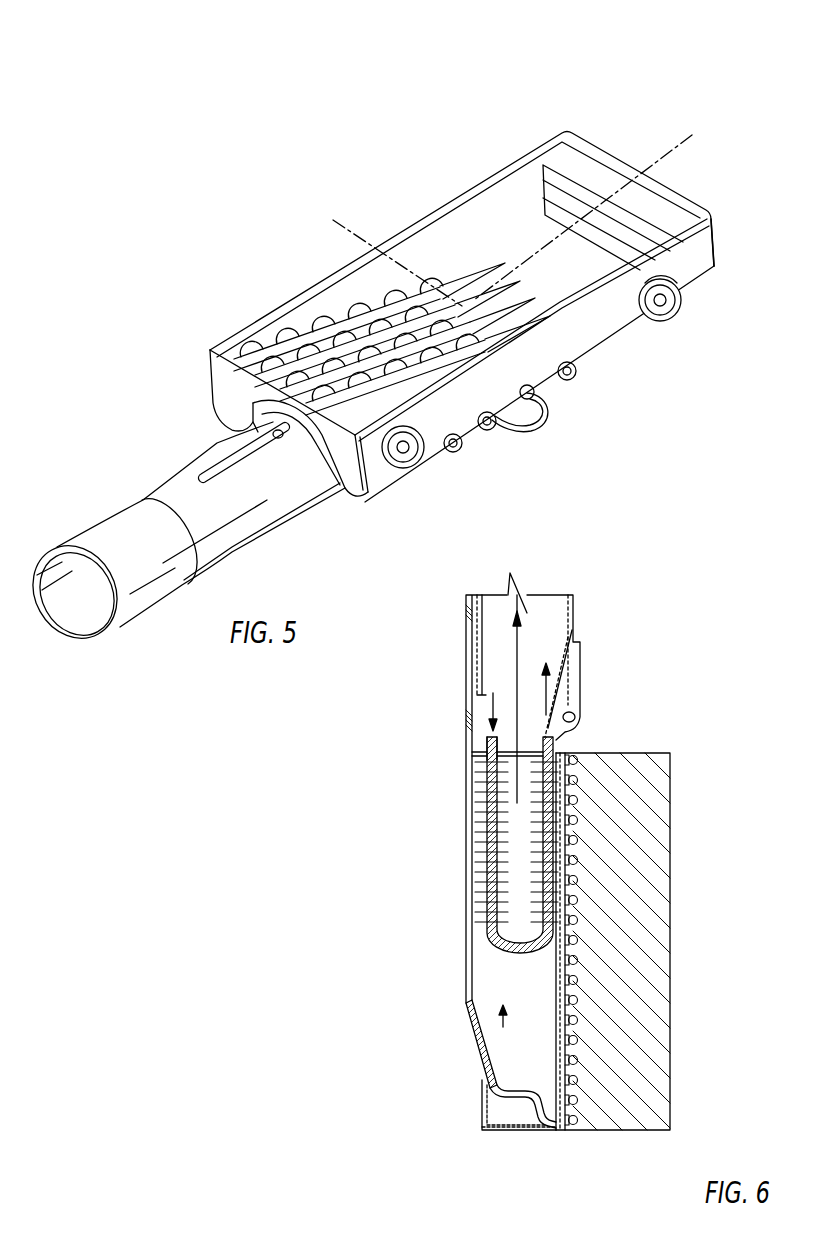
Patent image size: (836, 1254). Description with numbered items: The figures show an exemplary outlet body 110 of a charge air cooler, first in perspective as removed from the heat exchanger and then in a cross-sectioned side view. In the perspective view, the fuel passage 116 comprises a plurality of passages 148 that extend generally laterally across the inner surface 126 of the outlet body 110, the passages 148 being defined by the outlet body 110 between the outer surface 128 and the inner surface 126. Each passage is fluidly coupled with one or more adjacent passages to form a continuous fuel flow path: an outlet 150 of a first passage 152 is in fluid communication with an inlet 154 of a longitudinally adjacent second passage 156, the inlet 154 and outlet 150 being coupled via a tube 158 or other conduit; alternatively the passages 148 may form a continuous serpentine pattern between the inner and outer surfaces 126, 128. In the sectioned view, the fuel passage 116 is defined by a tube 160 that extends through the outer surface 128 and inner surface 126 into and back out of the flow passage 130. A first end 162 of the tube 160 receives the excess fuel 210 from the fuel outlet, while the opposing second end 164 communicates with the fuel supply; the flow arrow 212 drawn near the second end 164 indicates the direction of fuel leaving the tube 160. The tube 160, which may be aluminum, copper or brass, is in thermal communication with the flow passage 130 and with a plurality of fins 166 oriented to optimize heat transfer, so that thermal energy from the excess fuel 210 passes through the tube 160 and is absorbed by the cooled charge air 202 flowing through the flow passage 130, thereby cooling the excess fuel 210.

In FIG. 5, the outlet body 110 is at (569, 68).
In FIG. 6, the outlet body 110 is at (718, 590).
In FIG. 5, the fuel passage 116 is at (311, 350).
In FIG. 6, the fuel passage 116 is at (477, 1025).
In FIG. 5, the inner surface 126 is at (563, 283).
In FIG. 5, the outer surface 128 is at (713, 243).
In FIG. 5, the flow passage 130 is at (540, 282).
In FIG. 6, the flow passage 130 is at (552, 1024).
In FIG. 5, the plurality of passages 148 is at (425, 275).
In FIG. 5, the outlet 150 is at (466, 448).
In FIG. 5, the first passage 152 is at (479, 414).
In FIG. 5, the inlet 154 is at (560, 387).
In FIG. 5, the second passage 156 is at (525, 384).
In FIG. 5, the tube 158 is at (510, 438).
In FIG. 6, the tube 160 is at (484, 962).
In FIG. 6, the first end 162 is at (489, 737).
In FIG. 6, the second end 164 is at (575, 714).
In FIG. 6, the fins 166 is at (488, 862).
In FIG. 6, the cooled charge air 202 is at (521, 634).
In FIG. 6, the excess fuel 210 is at (490, 703).
In FIG. 6, the upward flow passage 212 is at (551, 693).